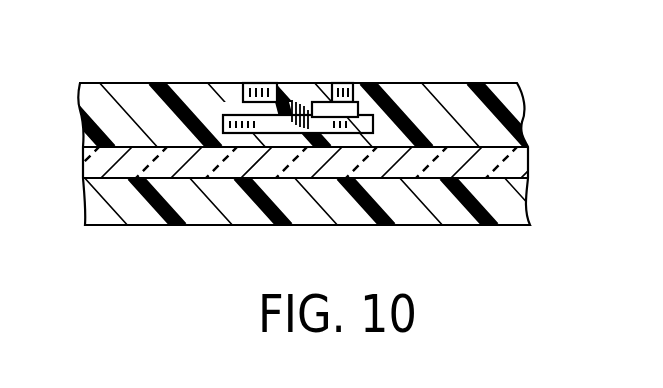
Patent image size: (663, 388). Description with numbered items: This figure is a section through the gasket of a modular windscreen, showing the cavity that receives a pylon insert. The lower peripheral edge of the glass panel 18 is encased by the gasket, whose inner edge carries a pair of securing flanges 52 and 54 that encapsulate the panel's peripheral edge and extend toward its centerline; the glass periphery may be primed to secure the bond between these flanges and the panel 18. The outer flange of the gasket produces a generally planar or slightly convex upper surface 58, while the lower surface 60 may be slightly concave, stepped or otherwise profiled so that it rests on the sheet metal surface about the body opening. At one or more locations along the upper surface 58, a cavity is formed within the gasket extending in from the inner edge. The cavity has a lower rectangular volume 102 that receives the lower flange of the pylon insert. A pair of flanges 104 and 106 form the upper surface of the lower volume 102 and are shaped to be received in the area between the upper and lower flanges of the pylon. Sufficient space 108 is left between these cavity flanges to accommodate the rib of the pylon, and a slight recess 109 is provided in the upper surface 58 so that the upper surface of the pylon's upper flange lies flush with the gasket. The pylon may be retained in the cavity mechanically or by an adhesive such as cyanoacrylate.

The securing flange 52 is at (137, 100).
The securing flange 54 is at (212, 217).
The panel 18 is at (518, 158).
The upper surface 58 is at (493, 84).
The lower surface 60 is at (386, 226).
The lower rectangular volume 102 is at (357, 105).
The flange 104 is at (326, 106).
The flange 106 is at (288, 100).
The space 108 is at (297, 104).
The recess 109 is at (252, 83).